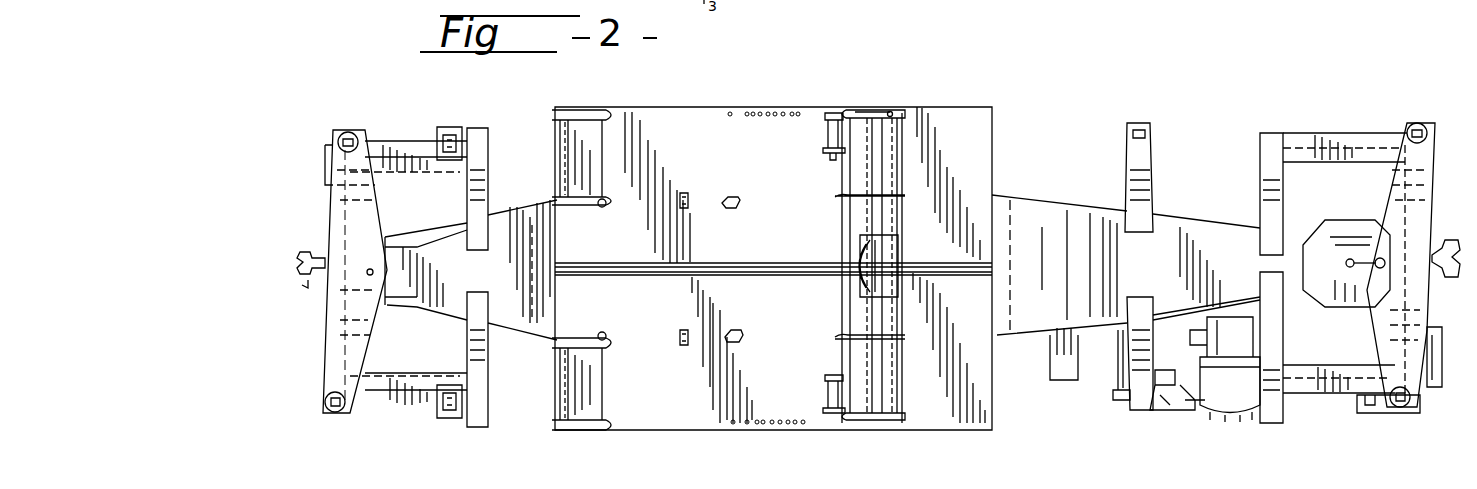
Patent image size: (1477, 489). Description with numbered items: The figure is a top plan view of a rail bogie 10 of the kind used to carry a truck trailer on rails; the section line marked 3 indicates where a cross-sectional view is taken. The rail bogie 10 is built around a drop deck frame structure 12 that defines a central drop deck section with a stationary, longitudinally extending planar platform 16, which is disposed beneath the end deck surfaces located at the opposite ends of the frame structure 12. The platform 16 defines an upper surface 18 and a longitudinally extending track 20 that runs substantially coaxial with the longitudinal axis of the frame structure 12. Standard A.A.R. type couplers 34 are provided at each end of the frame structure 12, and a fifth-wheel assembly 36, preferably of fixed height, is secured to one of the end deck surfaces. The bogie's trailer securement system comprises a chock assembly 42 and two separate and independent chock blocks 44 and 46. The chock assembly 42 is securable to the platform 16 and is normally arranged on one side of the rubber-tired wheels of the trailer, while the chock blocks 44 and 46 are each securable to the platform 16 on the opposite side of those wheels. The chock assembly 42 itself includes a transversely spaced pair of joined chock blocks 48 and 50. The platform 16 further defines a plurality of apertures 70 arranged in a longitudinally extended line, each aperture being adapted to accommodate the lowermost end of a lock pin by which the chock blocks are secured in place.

The rail bogie 10 is at (1042, 100).
The drop deck frame structure 12 is at (388, 140).
The planar platform 16 is at (668, 107).
The upper surface 18 is at (738, 167).
The longitudinally extending track 20 is at (745, 275).
The couplers 34 is at (322, 280).
The fifth-wheel assembly 36 is at (1348, 220).
The chock assembly 42 is at (892, 110).
The chock block 44 is at (558, 385).
The chock block 46 is at (558, 152).
The chock block 48 is at (862, 170).
The chock block 50 is at (860, 352).
The apertures 70 is at (798, 112).
The section line 3 is at (780, 220).